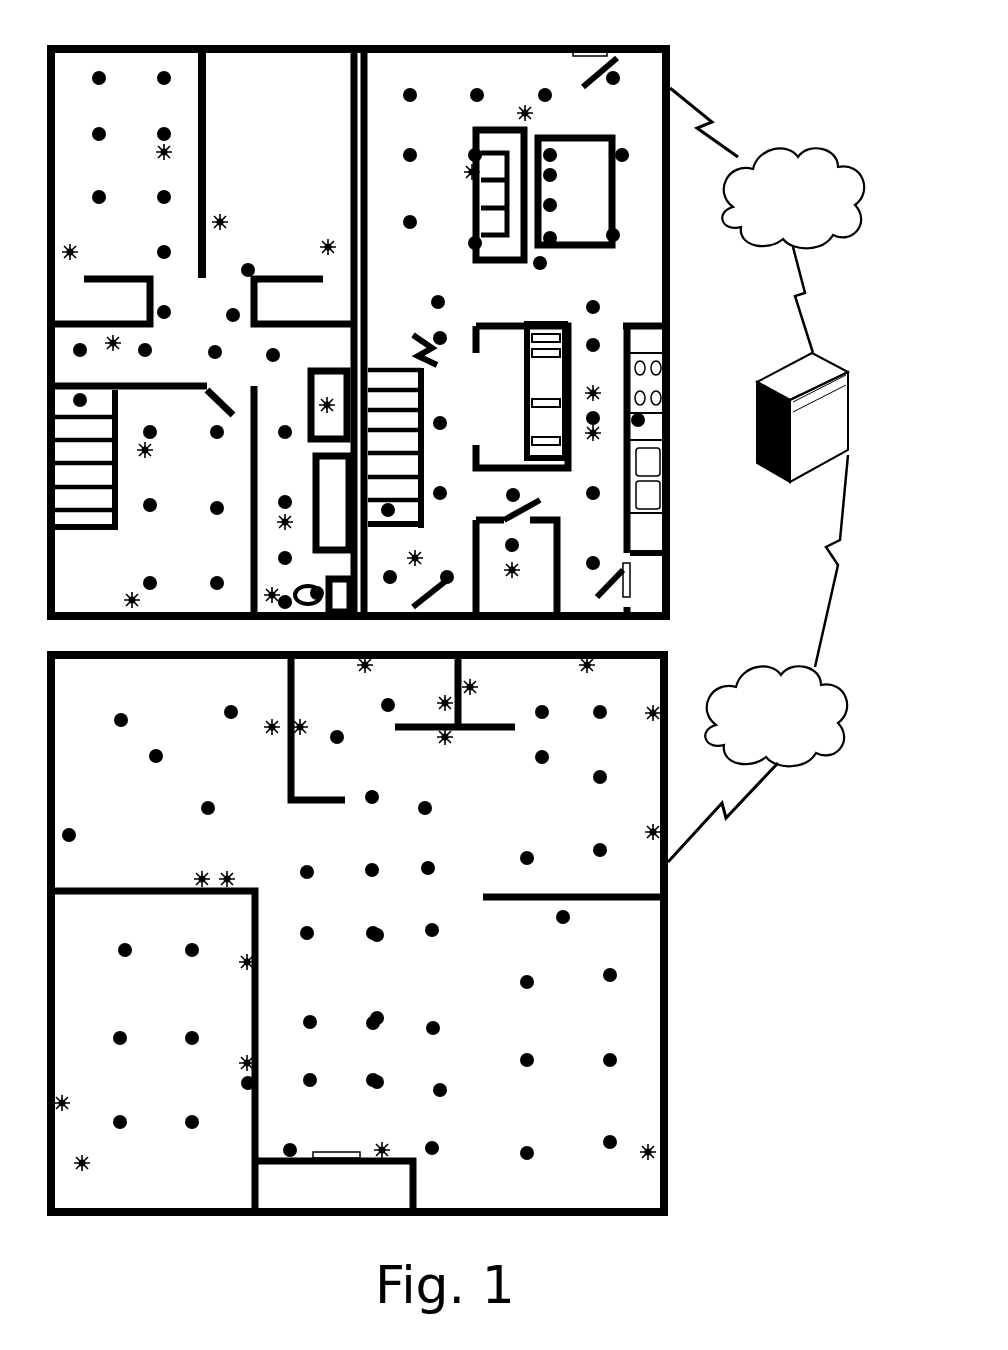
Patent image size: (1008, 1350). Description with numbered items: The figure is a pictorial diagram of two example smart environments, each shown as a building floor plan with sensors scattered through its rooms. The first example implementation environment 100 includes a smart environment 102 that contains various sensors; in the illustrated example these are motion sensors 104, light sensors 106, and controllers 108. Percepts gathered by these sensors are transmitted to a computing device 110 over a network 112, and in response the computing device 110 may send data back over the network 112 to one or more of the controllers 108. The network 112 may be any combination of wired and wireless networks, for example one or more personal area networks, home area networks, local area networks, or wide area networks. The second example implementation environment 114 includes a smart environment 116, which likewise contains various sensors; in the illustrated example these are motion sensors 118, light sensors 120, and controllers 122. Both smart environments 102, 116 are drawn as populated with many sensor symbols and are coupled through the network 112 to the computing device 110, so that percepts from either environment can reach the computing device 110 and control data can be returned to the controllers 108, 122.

The implementation environment 100 is at (738, 56).
The smart environment 102 is at (670, 300).
The motion sensors 104 is at (437, 335).
The light sensors 106 is at (72, 247).
The controllers 108 is at (220, 215).
The computing device 110 is at (787, 483).
The network 112 is at (782, 150).
The implementation environment 114 is at (737, 1160).
The smart environment 116 is at (668, 965).
The motion sensors 118 is at (430, 862).
The light sensors 120 is at (227, 875).
The controllers 122 is at (448, 745).